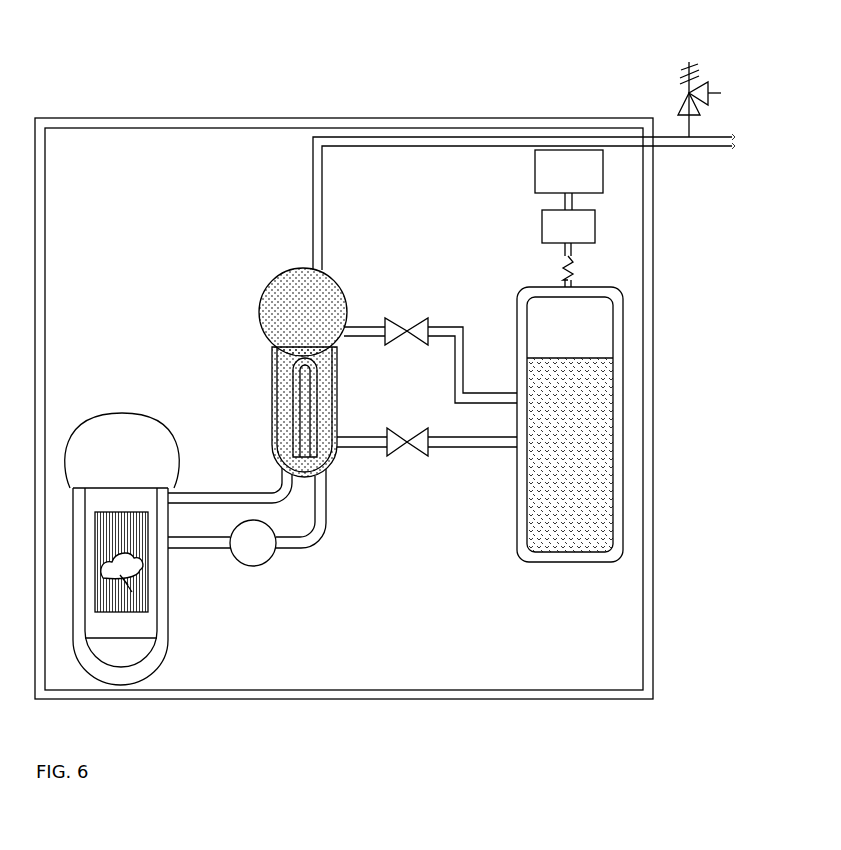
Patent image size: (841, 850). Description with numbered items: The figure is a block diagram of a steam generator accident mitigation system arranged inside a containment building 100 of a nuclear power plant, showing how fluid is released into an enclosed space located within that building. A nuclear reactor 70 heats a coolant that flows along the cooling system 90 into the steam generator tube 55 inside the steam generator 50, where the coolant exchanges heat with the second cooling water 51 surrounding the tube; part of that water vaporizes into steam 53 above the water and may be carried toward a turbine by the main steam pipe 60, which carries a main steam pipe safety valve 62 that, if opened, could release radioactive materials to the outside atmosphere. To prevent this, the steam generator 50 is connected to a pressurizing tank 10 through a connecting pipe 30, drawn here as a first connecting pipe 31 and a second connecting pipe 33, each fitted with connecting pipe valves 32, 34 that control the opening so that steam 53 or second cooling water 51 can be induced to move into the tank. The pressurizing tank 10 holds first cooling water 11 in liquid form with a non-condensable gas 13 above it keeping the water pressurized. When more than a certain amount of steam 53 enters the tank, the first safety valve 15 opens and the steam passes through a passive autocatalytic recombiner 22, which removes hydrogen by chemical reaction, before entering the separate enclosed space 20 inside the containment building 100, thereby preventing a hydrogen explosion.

The pressurizing tank 10 is at (551, 436).
The first cooling water 11 is at (524, 527).
The non-condensable gas 13 is at (600, 308).
The first safety valve 15 is at (565, 273).
The enclosed space 20 is at (535, 173).
The passive autocatalytic recombiner 22 is at (542, 226).
The connecting pipe 30 is at (276, 506).
The first connecting pipe 31 is at (458, 322).
The connecting pipe valve 32 is at (407, 322).
The second connecting pipe 33 is at (466, 449).
The connecting pipe valve 34 is at (410, 455).
The steam generator 50 is at (269, 355).
The second cooling water 51 is at (270, 405).
The steam 53 is at (290, 295).
The steam generator tube 55 is at (295, 380).
The main steam pipe 60 is at (447, 136).
The main steam pipe safety valve 62 is at (702, 85).
The nuclear reactor 70 is at (172, 630).
The cooling system 90 is at (218, 492).
The containment building 100 is at (627, 96).